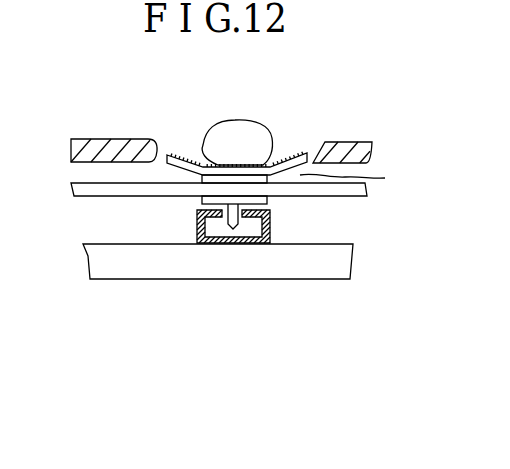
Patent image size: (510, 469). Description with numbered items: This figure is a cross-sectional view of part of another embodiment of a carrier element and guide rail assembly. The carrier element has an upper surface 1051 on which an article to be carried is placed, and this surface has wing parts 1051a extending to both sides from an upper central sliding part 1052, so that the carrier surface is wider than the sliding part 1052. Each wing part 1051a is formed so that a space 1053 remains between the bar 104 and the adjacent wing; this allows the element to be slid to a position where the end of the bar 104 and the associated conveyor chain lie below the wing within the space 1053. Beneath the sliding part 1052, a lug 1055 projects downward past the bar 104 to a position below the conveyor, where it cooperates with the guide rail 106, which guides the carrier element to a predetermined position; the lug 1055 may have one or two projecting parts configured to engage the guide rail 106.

The upper surface 1051 is at (207, 166).
The wing parts 1051a is at (294, 158).
The sliding part 1052 is at (270, 178).
The space 1053 is at (359, 178).
The lug 1055 is at (229, 243).
The bar 104 is at (108, 197).
The guide rail 106 is at (197, 228).